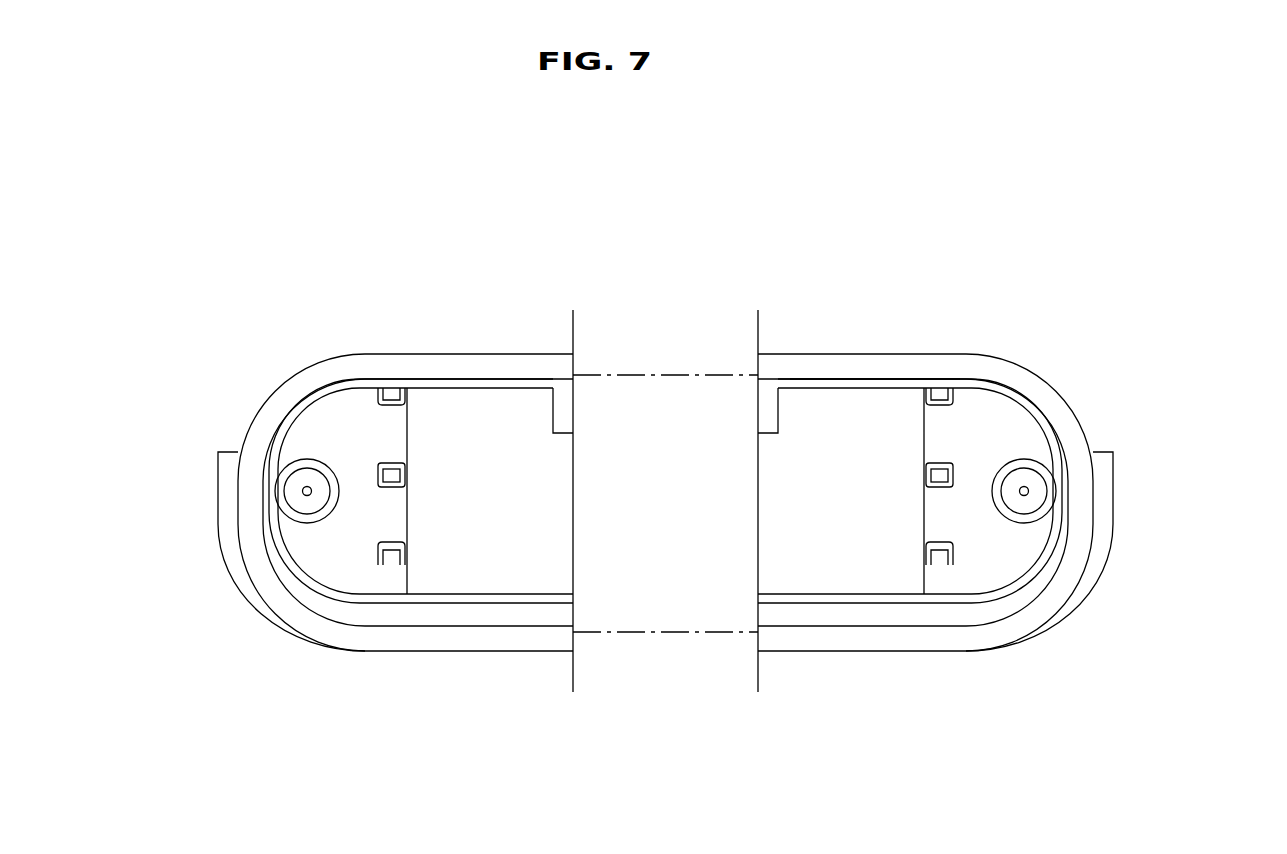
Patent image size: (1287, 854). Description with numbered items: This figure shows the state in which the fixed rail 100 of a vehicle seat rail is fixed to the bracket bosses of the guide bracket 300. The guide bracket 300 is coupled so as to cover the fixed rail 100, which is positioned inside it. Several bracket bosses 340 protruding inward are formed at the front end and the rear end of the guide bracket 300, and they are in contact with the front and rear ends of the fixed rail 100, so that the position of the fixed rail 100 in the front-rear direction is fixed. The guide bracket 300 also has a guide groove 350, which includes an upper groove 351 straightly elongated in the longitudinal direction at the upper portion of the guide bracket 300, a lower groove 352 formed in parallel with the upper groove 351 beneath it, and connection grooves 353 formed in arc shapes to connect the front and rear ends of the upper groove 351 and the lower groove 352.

The fixed rail 100 is at (818, 560).
The guide bracket 300 is at (896, 348).
The bracket boss 340 is at (378, 470).
The guide groove 350 is at (463, 368).
The upper groove 351 is at (835, 368).
The lower groove 352 is at (494, 615).
The connection groove 353 is at (250, 505).